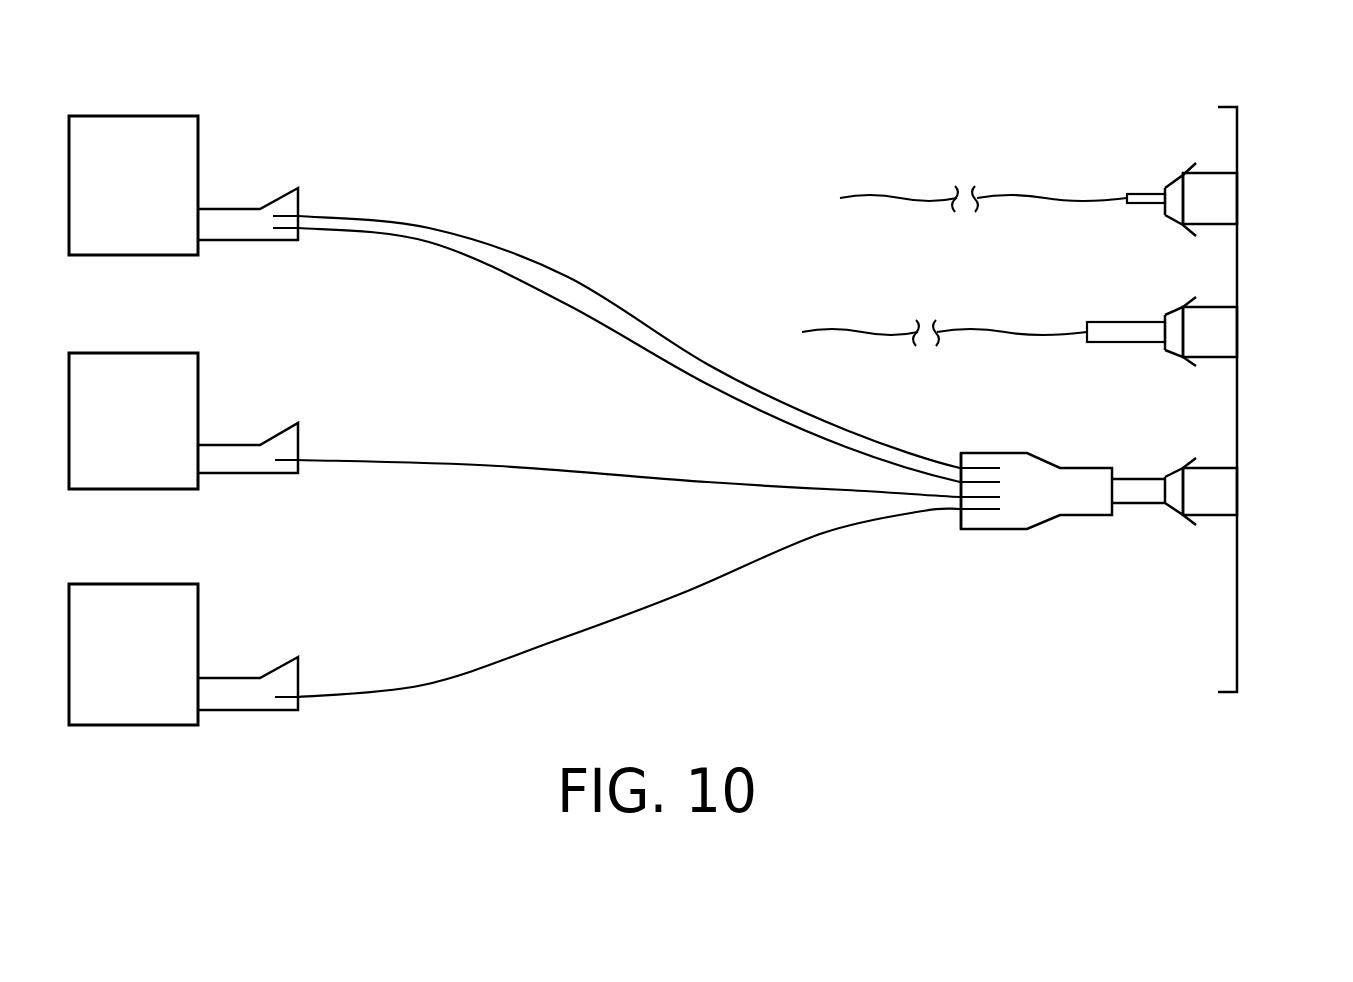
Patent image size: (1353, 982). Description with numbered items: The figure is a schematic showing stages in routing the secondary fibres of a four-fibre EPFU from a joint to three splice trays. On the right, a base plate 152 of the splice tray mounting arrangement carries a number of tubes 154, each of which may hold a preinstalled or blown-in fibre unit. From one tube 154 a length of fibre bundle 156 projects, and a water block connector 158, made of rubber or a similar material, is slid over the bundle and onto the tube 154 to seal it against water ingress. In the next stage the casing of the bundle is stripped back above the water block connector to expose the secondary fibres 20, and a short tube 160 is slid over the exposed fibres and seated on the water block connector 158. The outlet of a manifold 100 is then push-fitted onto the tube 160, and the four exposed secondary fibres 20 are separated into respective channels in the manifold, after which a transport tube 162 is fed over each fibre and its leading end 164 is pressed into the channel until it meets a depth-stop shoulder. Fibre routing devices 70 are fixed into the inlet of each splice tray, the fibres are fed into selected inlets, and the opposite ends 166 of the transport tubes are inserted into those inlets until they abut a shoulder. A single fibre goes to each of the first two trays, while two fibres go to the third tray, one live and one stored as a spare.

The fibre routing device 70 is at (262, 241).
The opposite end of transport tube 166 is at (278, 216).
The transport tube 162 is at (500, 464).
The manifold 100 is at (1020, 530).
The leading end of transport tube 164 is at (985, 466).
The secondary fibre 20 is at (880, 198).
The fibre bundle 156 is at (1135, 195).
The water block connector 158 is at (1170, 173).
The short tube 160 is at (1113, 322).
The tube 154 is at (1237, 200).
The base plate 152 is at (1237, 600).